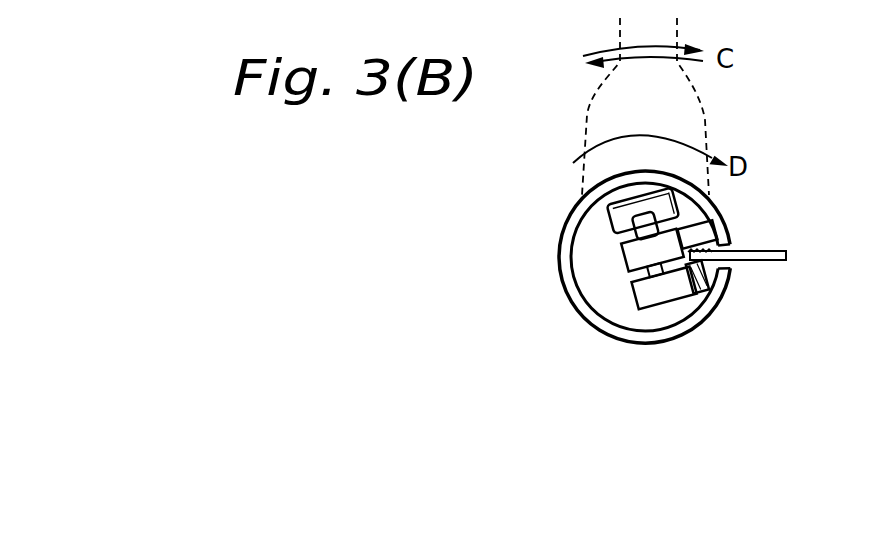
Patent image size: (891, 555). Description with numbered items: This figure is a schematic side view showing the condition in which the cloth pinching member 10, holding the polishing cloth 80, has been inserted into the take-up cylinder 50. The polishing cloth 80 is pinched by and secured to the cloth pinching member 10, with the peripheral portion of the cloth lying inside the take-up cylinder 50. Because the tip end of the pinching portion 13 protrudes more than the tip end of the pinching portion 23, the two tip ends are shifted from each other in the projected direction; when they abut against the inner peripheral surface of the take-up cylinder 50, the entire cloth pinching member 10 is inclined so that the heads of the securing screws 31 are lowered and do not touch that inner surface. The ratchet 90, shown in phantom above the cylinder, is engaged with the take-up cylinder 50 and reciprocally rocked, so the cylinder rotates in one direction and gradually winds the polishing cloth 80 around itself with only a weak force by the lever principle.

The cloth pinching member 10 is at (600, 288).
The pinching portion 13 is at (702, 233).
The pinching portion 23 is at (712, 292).
The securing screws 31 is at (608, 216).
The take-up cylinder 50 is at (556, 224).
The polishing cloth 80 is at (770, 248).
The ratchet 90 is at (704, 116).